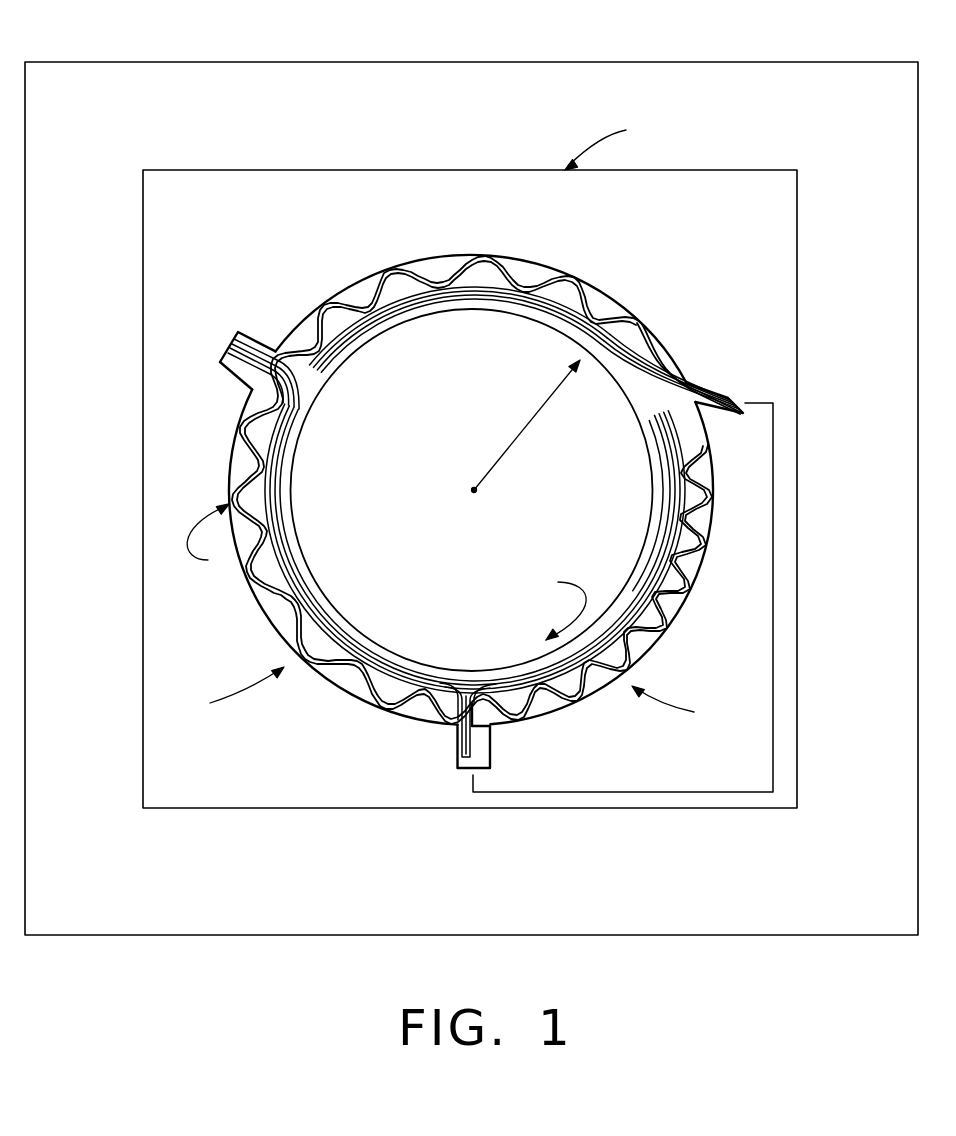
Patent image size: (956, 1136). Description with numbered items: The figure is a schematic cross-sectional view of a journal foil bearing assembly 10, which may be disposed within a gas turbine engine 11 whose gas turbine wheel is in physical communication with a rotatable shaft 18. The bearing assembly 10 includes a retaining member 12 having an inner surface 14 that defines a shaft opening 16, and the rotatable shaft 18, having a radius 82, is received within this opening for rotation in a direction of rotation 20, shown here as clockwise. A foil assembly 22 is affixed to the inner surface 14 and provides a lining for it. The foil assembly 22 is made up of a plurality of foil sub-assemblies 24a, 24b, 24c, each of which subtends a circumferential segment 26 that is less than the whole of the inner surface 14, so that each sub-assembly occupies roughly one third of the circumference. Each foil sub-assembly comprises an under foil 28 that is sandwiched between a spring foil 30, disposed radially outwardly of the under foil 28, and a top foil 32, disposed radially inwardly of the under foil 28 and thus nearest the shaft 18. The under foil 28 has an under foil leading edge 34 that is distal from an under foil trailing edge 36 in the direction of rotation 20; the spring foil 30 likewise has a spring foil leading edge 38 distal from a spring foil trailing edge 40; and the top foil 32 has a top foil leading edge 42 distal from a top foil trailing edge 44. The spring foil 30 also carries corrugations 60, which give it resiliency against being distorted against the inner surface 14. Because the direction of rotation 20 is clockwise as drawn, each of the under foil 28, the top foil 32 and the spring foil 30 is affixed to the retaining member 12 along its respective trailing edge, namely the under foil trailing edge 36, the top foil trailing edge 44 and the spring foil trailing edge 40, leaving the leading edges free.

The journal foil bearing assembly 10 is at (612, 141).
The gas turbine engine 11 is at (730, 62).
The retaining member 12 is at (700, 172).
The inner surface 14 is at (636, 302).
The shaft opening 16 is at (633, 410).
The rotatable shaft 18 is at (343, 542).
The direction of rotation 20 is at (553, 603).
The foil assembly 22 is at (456, 477).
The foil sub-assembly 24a is at (223, 692).
The foil sub-assembly 24b is at (686, 707).
The foil sub-assembly 24c is at (628, 290).
The circumferential segment 26 is at (771, 655).
The under foil 28 is at (250, 482).
The spring foil 30 is at (254, 445).
The top foil 32 is at (282, 450).
The under foil leading edge 34 is at (490, 718).
The under foil trailing edge 36 is at (305, 402).
The spring foil leading edge 38 is at (458, 722).
The spring foil trailing edge 40 is at (247, 366).
The top foil leading edge 42 is at (482, 682).
The top foil trailing edge 44 is at (318, 398).
The corrugations 60 is at (209, 541).
The radius 82 is at (525, 450).